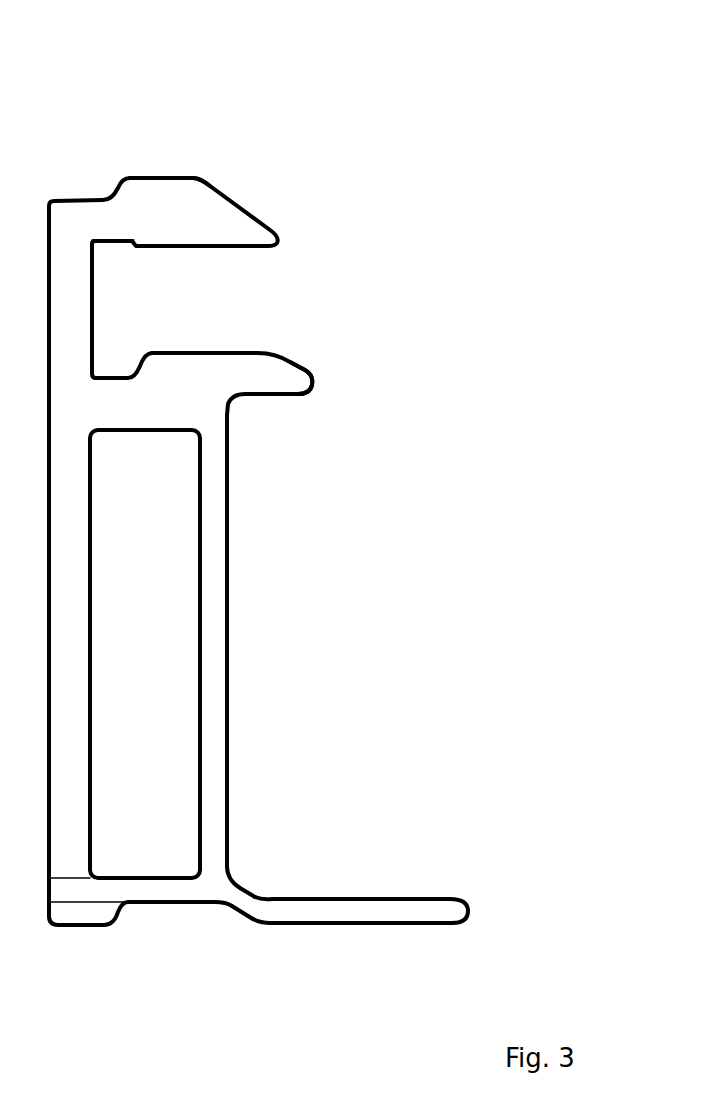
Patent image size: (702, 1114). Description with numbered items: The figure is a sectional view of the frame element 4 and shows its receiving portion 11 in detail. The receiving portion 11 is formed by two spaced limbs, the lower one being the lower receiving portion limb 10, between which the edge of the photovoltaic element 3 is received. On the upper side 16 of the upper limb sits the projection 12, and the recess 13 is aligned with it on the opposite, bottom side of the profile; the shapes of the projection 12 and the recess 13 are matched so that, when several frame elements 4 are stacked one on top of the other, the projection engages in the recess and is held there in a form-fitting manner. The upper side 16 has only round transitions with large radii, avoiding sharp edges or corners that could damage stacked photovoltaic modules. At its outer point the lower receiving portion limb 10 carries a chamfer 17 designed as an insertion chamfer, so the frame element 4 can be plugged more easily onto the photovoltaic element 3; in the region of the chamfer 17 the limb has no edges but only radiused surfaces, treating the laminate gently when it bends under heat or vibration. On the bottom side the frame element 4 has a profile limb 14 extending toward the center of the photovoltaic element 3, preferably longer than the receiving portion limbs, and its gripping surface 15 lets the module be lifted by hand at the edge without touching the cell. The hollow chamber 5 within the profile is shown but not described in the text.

The photovoltaic element 3 is at (242, 220).
The frame element 4 is at (345, 173).
The hollow chamber 5 is at (145, 668).
The lower receiving portion limb 10 is at (265, 382).
The receiving portion 11 is at (230, 308).
The projection 12 is at (162, 172).
The recess 13 is at (175, 913).
The profile limb 14 is at (412, 913).
The gripping surface 15 is at (348, 928).
The upper side 16 is at (222, 178).
The chamfer 17 is at (287, 363).